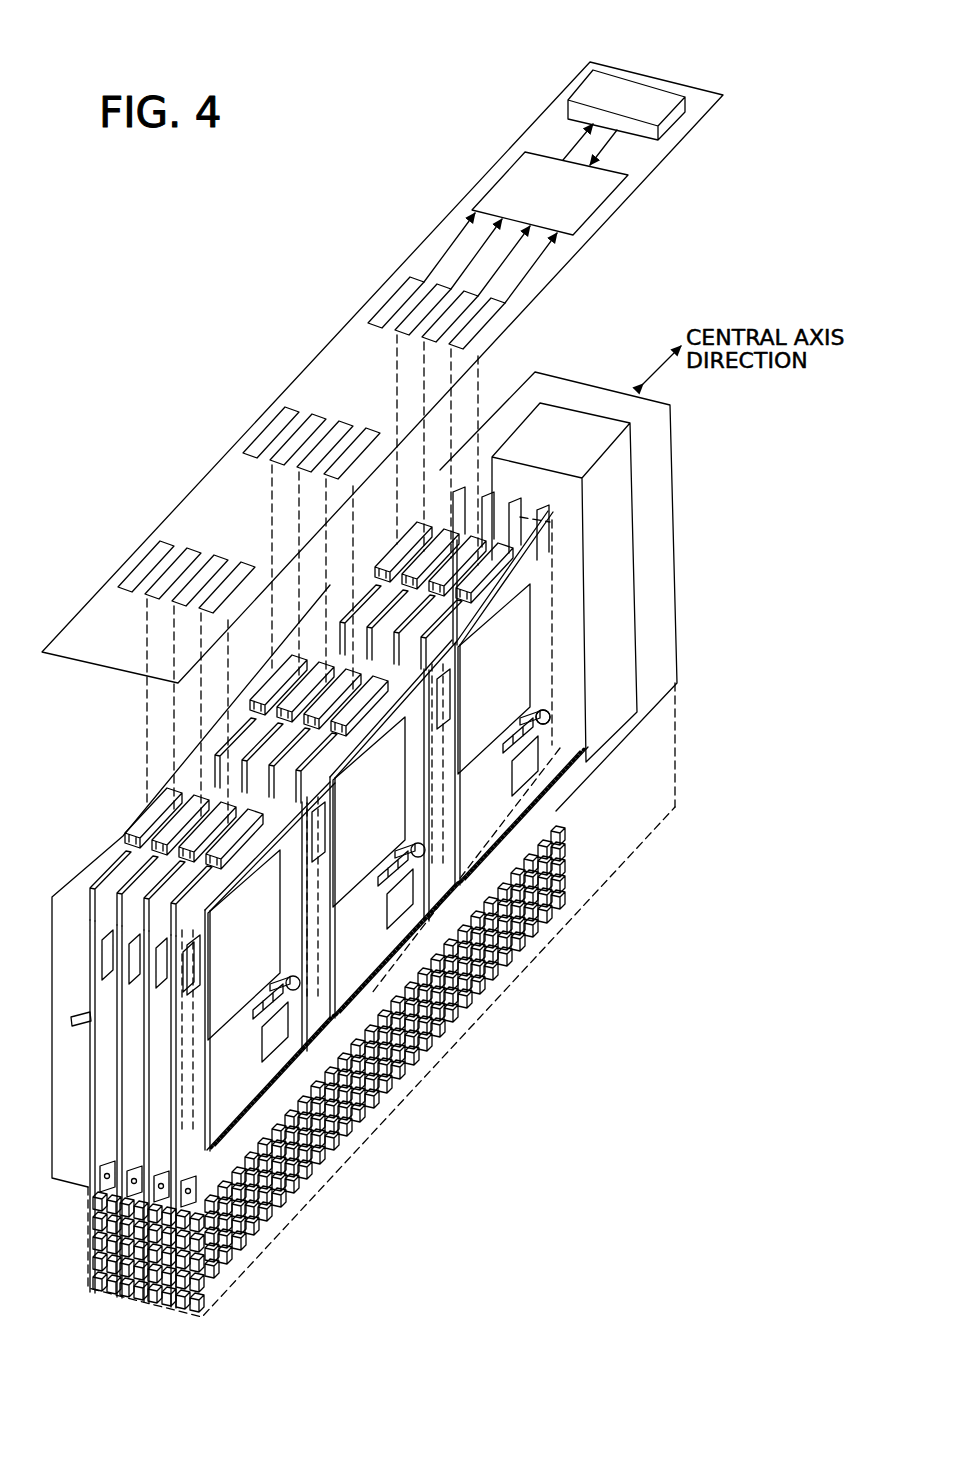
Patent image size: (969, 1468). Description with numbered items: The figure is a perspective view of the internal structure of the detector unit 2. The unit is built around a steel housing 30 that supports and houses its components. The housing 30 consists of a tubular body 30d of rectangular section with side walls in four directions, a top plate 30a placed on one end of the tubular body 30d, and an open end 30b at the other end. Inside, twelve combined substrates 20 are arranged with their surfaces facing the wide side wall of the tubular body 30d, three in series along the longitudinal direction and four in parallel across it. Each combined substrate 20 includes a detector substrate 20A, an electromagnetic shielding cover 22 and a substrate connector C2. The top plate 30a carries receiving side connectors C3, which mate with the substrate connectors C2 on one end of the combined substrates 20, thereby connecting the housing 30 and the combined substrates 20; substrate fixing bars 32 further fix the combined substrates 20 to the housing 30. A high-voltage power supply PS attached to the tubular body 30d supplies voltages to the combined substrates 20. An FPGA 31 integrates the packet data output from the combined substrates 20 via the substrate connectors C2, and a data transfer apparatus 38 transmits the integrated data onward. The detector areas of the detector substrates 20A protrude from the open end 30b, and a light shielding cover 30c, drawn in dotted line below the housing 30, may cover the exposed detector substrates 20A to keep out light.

The detector unit 2 is at (403, 162).
The FPGA 31 is at (512, 195).
The data transfer apparatus 38 is at (640, 97).
The top plate 30a is at (612, 220).
The housing 30 is at (728, 220).
The tubular body 30d is at (575, 382).
The open end 30b is at (67, 1180).
The light shielding cover 30c is at (340, 1174).
The receiving side connectors C3 is at (157, 557).
The substrate connectors C2 is at (165, 835).
The high-voltage power supply PS is at (608, 531).
The substrate fixing bars 32 is at (83, 1015).
The electromagnetic shielding cover 22 is at (560, 720).
The combined substrate 20 is at (375, 1105).
The detector substrate 20A is at (183, 1303).